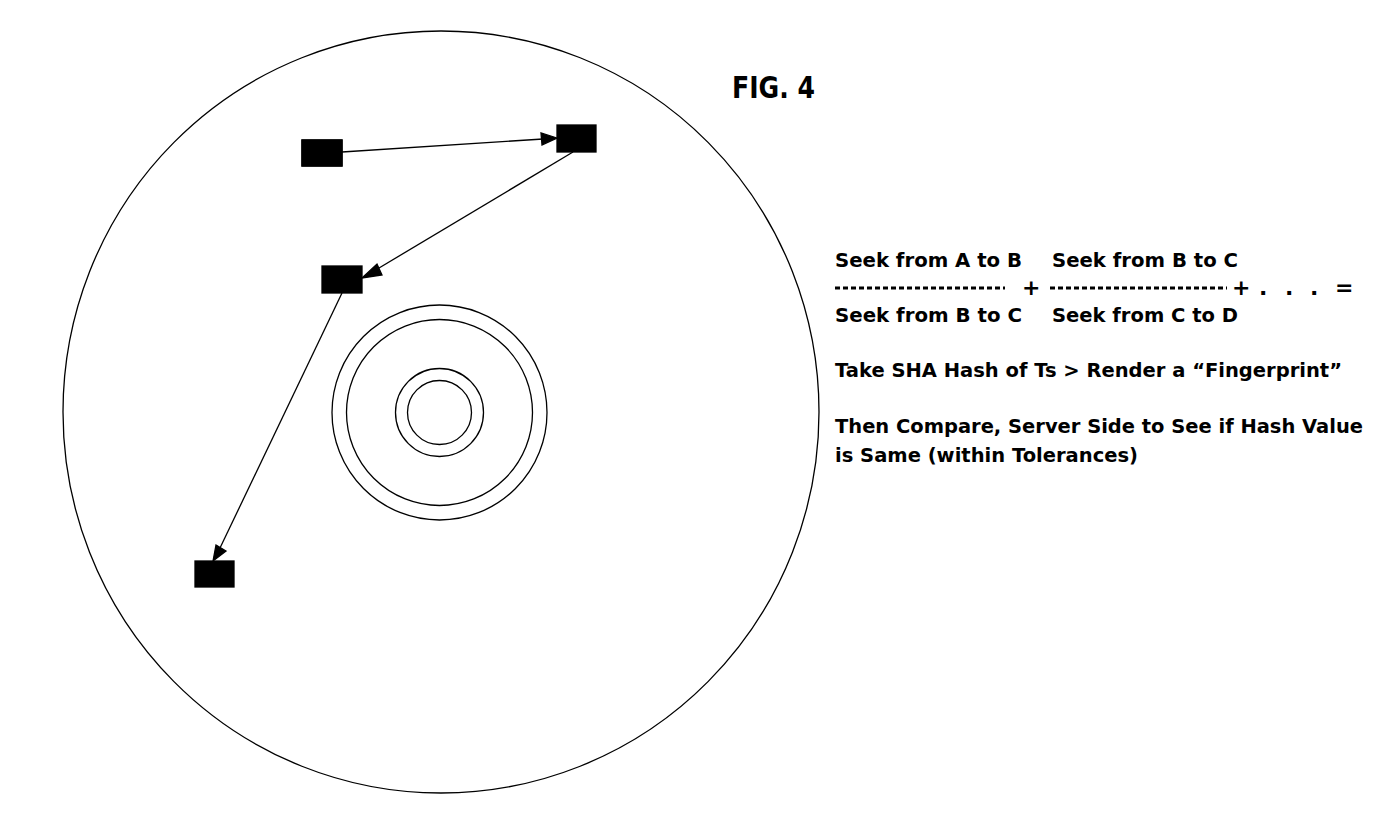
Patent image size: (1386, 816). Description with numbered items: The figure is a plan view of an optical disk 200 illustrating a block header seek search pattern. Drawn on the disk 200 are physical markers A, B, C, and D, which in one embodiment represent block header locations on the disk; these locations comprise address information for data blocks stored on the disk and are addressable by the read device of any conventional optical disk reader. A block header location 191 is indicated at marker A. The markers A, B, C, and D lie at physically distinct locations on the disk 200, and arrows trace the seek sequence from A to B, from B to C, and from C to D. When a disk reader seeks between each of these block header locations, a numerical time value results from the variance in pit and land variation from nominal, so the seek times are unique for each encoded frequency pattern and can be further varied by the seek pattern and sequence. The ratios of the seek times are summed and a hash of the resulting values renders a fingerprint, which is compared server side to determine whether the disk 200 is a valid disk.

The disk 200 is at (280, 66).
The data block 191 is at (327, 140).
The physical marker A is at (302, 153).
The physical marker B is at (588, 156).
The physical marker C is at (323, 291).
The physical marker D is at (233, 584).